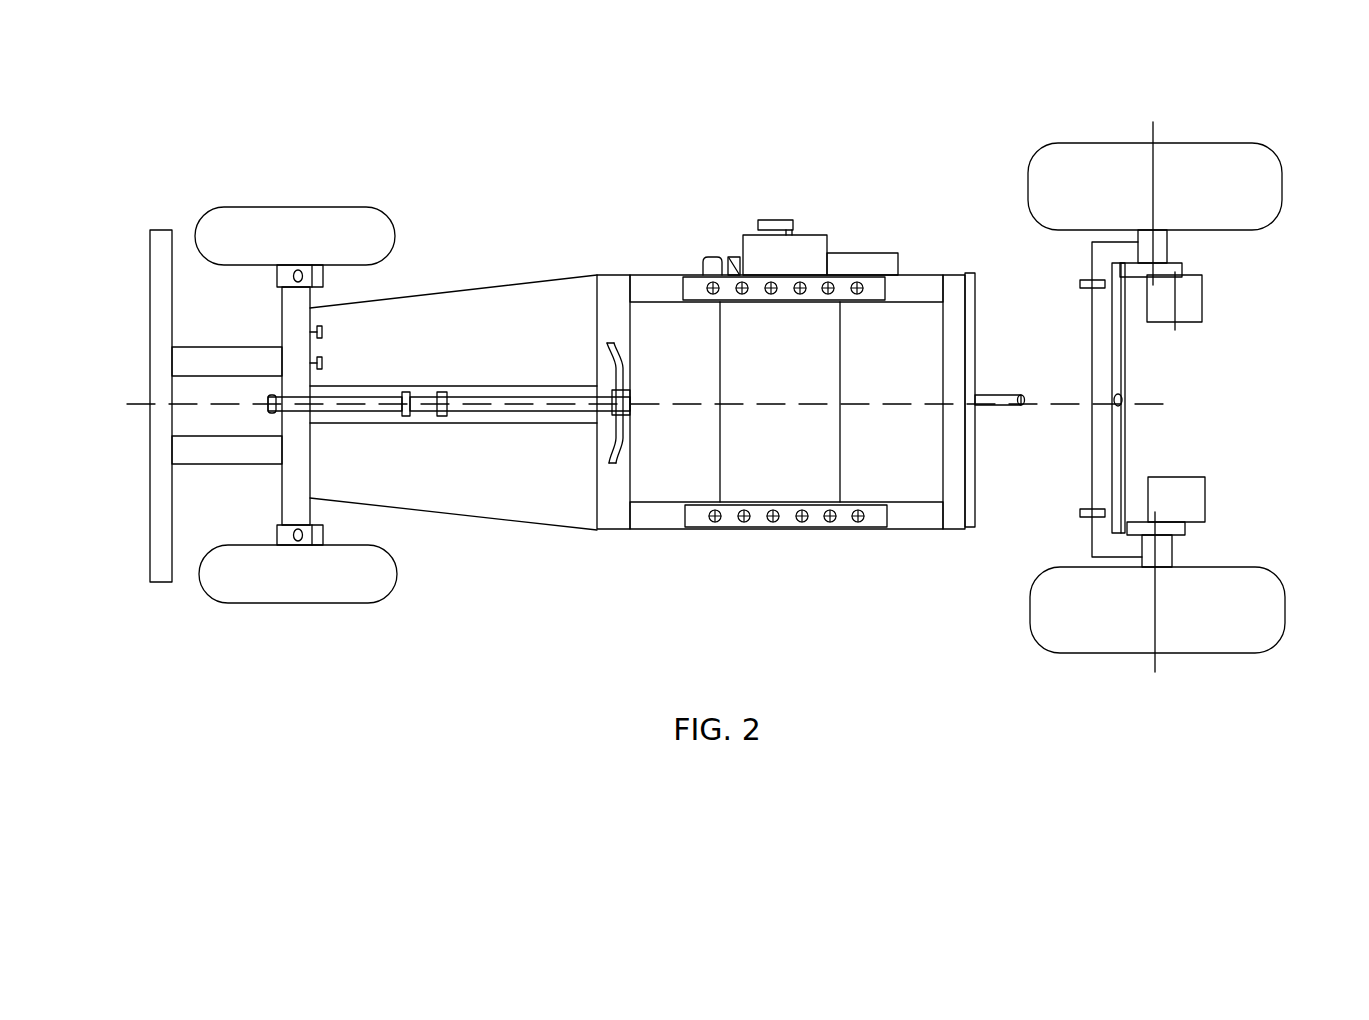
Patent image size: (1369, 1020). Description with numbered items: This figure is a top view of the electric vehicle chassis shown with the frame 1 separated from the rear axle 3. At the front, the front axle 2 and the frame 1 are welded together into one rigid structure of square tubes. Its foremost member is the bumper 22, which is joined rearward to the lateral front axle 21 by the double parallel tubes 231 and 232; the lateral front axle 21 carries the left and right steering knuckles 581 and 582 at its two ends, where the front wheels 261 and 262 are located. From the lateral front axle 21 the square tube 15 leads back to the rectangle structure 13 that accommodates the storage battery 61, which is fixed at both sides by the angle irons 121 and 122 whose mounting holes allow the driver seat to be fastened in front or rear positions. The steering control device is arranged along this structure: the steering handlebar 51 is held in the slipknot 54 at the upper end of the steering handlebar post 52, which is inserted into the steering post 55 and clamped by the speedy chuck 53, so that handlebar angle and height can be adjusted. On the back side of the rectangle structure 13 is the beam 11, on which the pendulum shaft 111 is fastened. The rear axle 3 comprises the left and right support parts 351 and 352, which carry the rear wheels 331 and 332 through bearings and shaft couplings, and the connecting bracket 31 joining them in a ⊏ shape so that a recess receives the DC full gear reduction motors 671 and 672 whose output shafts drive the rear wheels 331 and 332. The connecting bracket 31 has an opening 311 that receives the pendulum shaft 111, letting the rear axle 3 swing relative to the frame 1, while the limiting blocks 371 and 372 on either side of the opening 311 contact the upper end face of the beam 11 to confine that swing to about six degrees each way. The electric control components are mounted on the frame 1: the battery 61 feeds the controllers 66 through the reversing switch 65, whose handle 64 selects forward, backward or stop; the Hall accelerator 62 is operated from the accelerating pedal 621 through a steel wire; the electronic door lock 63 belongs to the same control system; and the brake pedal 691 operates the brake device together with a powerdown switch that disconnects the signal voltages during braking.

The frame 1 is at (777, 564).
The beam 11 is at (955, 515).
The pendulum shaft 111 is at (1005, 405).
The angle iron 121 is at (870, 515).
The angle iron 122 is at (812, 300).
The rectangle structure 13 is at (655, 517).
The square tube 15 is at (530, 420).
The front axle 2 is at (140, 473).
The lateral front axle 21 is at (300, 497).
The bumper 22 is at (157, 378).
The parallel tube 231 is at (228, 363).
The parallel tube 232 is at (228, 448).
The front wheel 261 is at (310, 225).
The front wheel 262 is at (292, 582).
The rear axle 3 is at (1282, 390).
The connecting bracket 31 is at (1110, 383).
The opening 311 is at (1125, 407).
The rear wheel 331 is at (1265, 190).
The rear wheel 332 is at (1268, 612).
The left support part 351 is at (1163, 250).
The right support part 352 is at (1165, 555).
The limiting block 371 is at (1078, 283).
The limiting block 372 is at (1078, 512).
The steering handlebar 51 is at (620, 362).
The steering handlebar post 52 is at (495, 412).
The speedy chuck 53 is at (445, 416).
The slipknot 54 is at (630, 405).
The steering post 55 is at (368, 410).
The left steering knuckle 581 is at (302, 542).
The right steering knuckle 582 is at (323, 270).
The storage battery 61 is at (702, 472).
The Hall accelerator 62 is at (708, 257).
The electronic door lock 63 is at (732, 257).
The handle 64 is at (770, 222).
The reversing switch 65 is at (812, 248).
The controller 66 is at (868, 262).
The accelerating pedal 621 is at (322, 332).
The left full gear reduction motor 671 is at (1193, 305).
The right full gear reduction motor 672 is at (1193, 503).
The brake pedal 691 is at (322, 363).